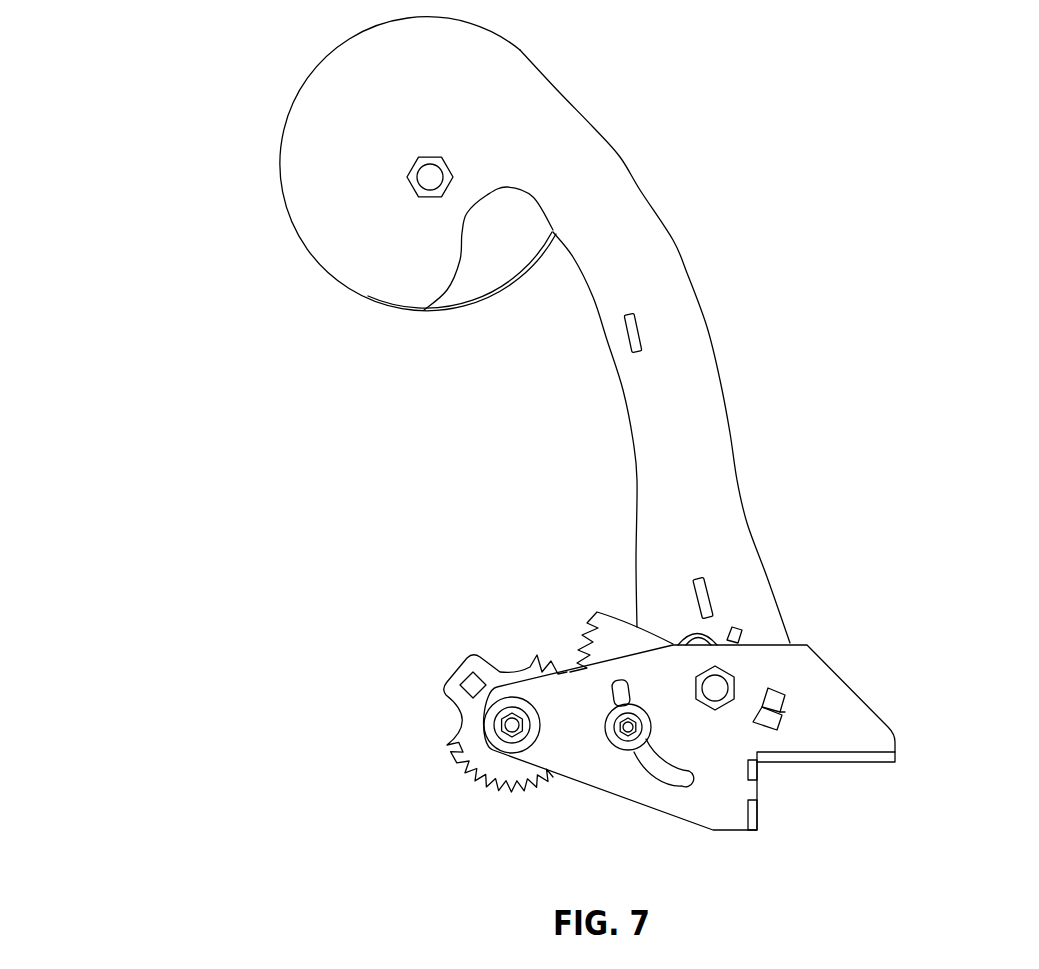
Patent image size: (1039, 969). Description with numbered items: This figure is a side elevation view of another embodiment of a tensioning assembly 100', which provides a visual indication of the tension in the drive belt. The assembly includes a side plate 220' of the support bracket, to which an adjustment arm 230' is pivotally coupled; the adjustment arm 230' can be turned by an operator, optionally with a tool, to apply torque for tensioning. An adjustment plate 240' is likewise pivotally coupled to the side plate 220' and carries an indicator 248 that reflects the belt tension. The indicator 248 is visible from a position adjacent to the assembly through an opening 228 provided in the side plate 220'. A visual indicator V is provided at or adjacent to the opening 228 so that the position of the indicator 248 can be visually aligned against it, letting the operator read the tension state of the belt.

The tensioning assembly 100' is at (541, 446).
The adjustment plate 240' is at (580, 587).
The adjustment arm 230' is at (442, 669).
The side plate 220' is at (761, 737).
The indicator 248 is at (775, 692).
The opening 228 is at (763, 732).
The visual indicator V is at (785, 712).